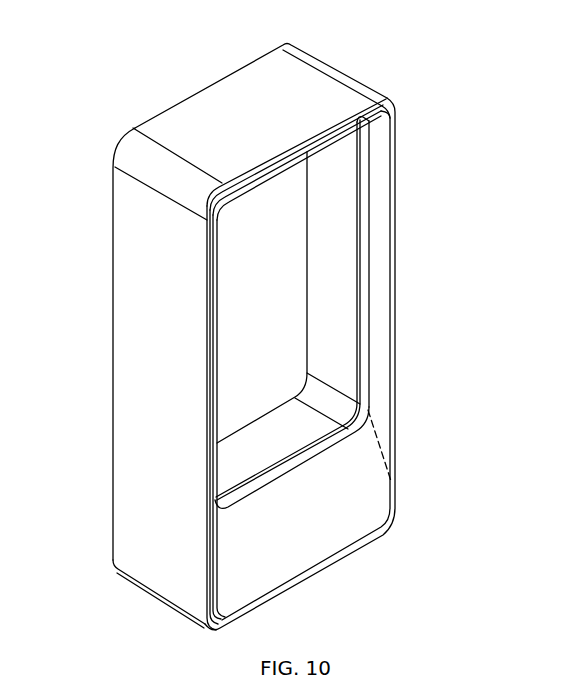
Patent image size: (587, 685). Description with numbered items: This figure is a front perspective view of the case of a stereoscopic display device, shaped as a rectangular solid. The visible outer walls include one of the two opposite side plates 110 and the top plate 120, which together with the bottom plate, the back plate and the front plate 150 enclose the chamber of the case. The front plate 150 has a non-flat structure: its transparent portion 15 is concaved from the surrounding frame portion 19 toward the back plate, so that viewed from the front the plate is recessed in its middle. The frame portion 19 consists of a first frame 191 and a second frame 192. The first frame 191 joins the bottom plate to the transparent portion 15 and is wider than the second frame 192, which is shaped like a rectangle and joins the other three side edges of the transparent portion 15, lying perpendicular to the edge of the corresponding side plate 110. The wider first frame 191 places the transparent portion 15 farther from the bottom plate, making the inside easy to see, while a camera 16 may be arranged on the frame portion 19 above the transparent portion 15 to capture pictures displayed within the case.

The side plate 110 is at (143, 347).
The top plate 120 is at (233, 100).
The front plate 150 is at (518, 370).
The transparent portion 15 is at (330, 285).
The camera 16 is at (292, 157).
The frame portion 19 is at (482, 322).
The first frame 191 is at (368, 495).
The second frame 192 is at (382, 353).